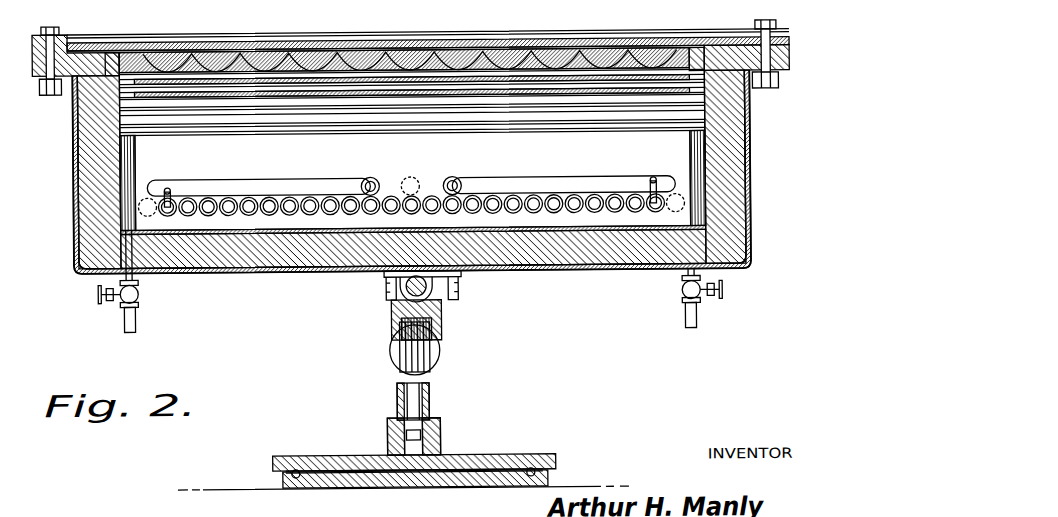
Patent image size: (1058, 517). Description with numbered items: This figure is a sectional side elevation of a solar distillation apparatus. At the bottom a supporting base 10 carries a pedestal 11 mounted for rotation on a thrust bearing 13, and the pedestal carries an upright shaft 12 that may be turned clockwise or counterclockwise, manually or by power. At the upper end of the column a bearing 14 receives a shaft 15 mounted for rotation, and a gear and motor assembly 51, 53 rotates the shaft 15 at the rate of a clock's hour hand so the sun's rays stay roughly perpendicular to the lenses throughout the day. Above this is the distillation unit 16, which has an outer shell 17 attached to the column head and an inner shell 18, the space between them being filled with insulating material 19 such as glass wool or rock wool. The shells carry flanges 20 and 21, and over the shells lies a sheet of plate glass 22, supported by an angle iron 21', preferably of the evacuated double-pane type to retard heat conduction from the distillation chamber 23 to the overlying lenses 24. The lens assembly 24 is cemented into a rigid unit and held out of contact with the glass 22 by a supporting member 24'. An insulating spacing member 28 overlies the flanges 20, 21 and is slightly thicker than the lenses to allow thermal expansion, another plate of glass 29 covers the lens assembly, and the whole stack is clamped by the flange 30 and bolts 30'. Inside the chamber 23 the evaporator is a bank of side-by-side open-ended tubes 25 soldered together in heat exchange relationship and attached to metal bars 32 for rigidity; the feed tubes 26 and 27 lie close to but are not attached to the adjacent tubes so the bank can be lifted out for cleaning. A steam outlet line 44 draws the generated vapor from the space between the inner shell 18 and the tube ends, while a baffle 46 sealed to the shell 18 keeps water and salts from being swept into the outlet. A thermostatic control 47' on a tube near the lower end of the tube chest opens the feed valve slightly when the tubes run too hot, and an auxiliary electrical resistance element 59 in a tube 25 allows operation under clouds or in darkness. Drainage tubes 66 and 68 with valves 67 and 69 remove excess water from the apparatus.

The supporting base 10 is at (342, 489).
The pedestal 11 is at (358, 456).
The upright shaft 12 is at (427, 398).
The thrust bearing 13 is at (443, 279).
The bearing 14 is at (383, 290).
The shaft 15 is at (405, 290).
The distillation unit 16 is at (757, 165).
The outer shell 17 is at (550, 270).
The inner shell 18 is at (705, 162).
The insulating material 19 is at (302, 258).
The flange 20 is at (778, 80).
The flange 21 is at (777, 36).
The angle iron 21' is at (680, 98).
The plate glass 22 is at (484, 95).
The distillation chamber 23 is at (377, 159).
The lenses 24 is at (404, 42).
The supporting member 24' is at (130, 41).
The open-ended tubes 25 is at (590, 196).
The feed tube 26 is at (684, 200).
The feed tube 27 is at (140, 212).
The spacing member 28 is at (30, 67).
The plate of glass 29 is at (218, 40).
The flange 30 is at (71, 52).
The bolts 30' is at (42, 18).
The metal bars 32 is at (228, 232).
The steam outlet line 44 is at (420, 177).
The baffle 46 is at (133, 163).
The thermostatic control 47' is at (411, 179).
The gear and motor assembly 51 is at (444, 294).
The gear and motor assembly 53 is at (440, 348).
The auxiliary electrical resistance element 59 is at (188, 200).
The drainage tube 66 is at (695, 318).
The valve 67 is at (722, 291).
The drainage tube 68 is at (123, 318).
The valve 69 is at (96, 292).